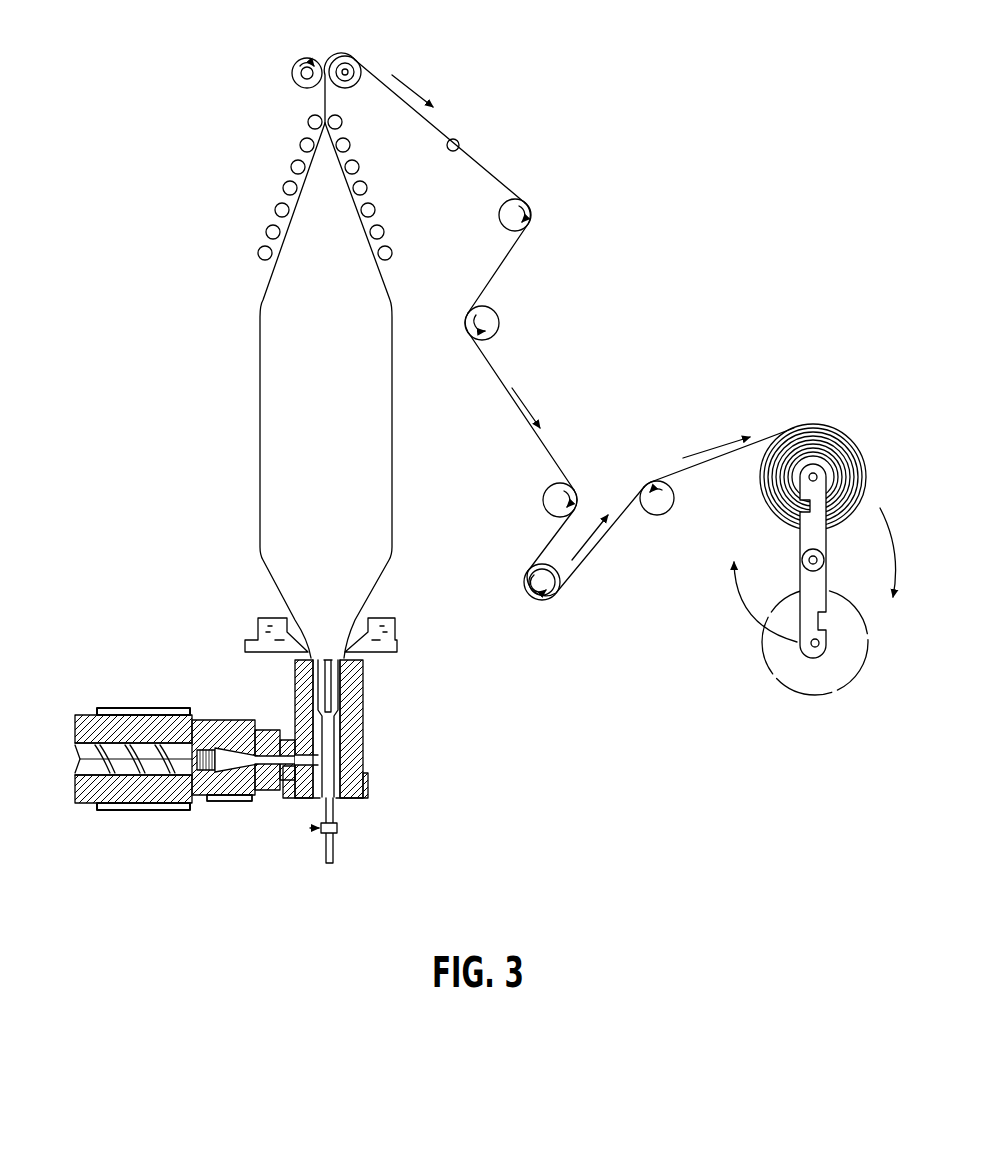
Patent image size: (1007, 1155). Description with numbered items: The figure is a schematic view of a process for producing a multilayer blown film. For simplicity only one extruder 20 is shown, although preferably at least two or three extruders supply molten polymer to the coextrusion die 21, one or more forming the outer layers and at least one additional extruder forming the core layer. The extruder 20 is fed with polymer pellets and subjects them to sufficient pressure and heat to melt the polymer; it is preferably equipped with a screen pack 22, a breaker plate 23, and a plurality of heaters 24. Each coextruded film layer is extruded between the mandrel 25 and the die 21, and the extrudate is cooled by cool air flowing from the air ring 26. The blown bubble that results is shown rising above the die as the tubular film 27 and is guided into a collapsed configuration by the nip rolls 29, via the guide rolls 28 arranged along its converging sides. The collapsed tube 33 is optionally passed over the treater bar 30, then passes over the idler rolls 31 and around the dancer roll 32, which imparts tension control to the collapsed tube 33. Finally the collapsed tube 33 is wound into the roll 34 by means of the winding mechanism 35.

The extruder 20 is at (128, 706).
The coextrusion die 21 is at (364, 668).
The screen pack 22 is at (212, 720).
The breaker plate 23 is at (205, 801).
The heaters 24 is at (108, 812).
The mandrel 25 is at (333, 651).
The air ring 26 is at (258, 622).
The tubular film bubble 27 is at (260, 380).
The guide rolls 28 is at (265, 253).
The nip rolls 29 is at (335, 56).
The treater bar 30 is at (456, 139).
The idler rolls 31 is at (500, 315).
The dancer roll 32 is at (562, 596).
The collapsed tube 33 is at (322, 97).
The roll 34 is at (848, 592).
The winding mechanism 35 is at (800, 560).